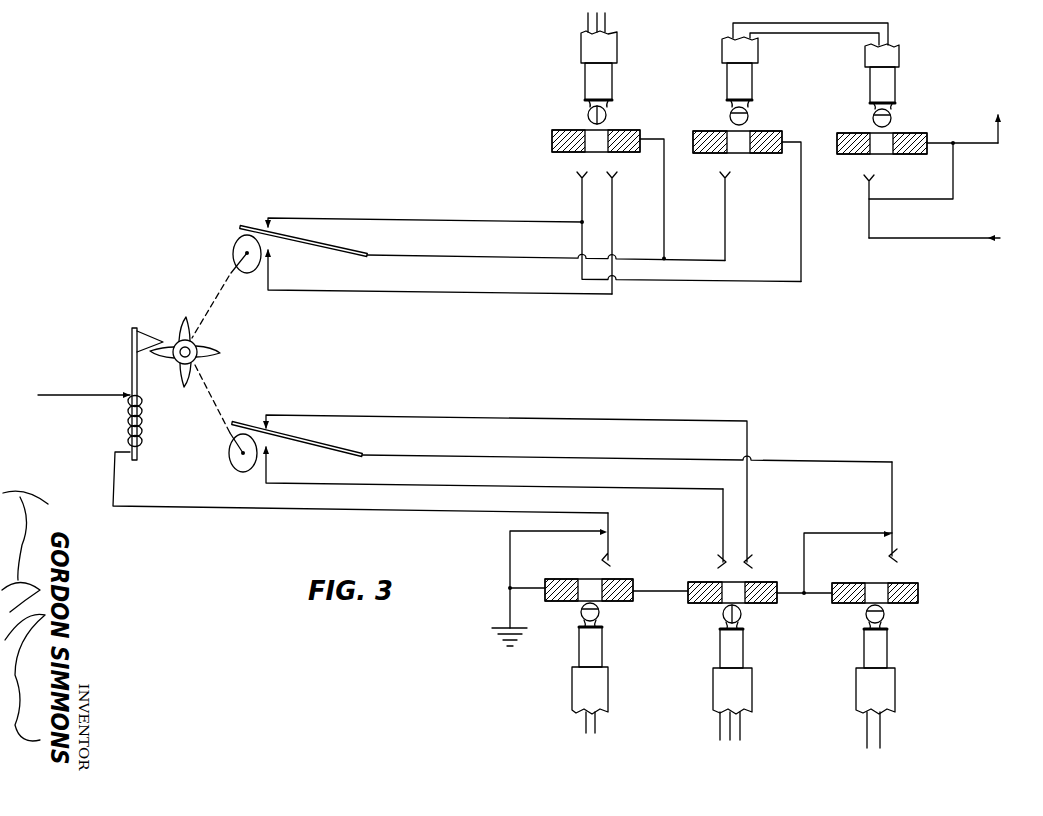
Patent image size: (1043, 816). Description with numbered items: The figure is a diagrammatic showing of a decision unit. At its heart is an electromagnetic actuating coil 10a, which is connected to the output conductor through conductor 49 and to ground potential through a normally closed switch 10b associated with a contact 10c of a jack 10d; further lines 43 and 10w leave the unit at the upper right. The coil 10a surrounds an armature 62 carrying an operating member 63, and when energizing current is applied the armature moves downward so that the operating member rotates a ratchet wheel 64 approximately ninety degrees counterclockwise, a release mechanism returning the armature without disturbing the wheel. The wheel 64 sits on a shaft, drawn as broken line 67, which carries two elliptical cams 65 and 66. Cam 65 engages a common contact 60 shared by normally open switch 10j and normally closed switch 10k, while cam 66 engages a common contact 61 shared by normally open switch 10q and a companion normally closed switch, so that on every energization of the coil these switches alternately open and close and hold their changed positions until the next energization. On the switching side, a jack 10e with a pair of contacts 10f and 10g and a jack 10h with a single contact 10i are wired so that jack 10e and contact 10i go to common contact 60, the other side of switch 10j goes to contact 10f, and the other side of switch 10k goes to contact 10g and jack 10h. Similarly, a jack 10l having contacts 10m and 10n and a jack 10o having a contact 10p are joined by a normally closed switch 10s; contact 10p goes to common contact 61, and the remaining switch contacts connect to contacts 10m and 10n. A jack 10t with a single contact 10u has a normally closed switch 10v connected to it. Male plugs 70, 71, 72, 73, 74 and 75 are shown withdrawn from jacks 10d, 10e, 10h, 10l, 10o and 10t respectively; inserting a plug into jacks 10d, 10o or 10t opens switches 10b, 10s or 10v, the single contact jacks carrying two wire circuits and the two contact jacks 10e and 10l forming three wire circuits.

The electromagnetic actuating coil 10a is at (127, 425).
The normally closed switch 10b is at (548, 533).
The contact 10c is at (610, 560).
The jack 10d is at (618, 603).
The jack 10e is at (553, 139).
The contact 10f is at (617, 172).
The contact 10g is at (572, 172).
The jack 10h is at (695, 134).
The contact 10i is at (730, 173).
The normally open switch 10j is at (311, 282).
The normally closed switch 10k is at (343, 243).
The jack 10l is at (688, 592).
The contact 10m is at (718, 562).
The contact 10n is at (323, 436).
The jack 10o is at (847, 603).
The contact 10p is at (894, 556).
The normally open switch 10q is at (307, 477).
The normally closed switch 10s is at (848, 533).
The jack 10t is at (839, 135).
The contact 10u is at (869, 173).
The normally closed switch 10v is at (904, 200).
The conductor 10w is at (900, 238).
The output line 43 is at (1001, 136).
The conductor 49 is at (57, 393).
The common contact 60 is at (348, 255).
The common contact 61 is at (333, 451).
The armature 62 is at (132, 367).
The operating member 63 is at (158, 325).
The ratchet wheel 64 is at (221, 350).
The cam 65 is at (234, 249).
The cam 66 is at (229, 455).
The shaft 67 is at (194, 418).
The male plug 70 is at (572, 686).
The male plug 71 is at (581, 46).
The male plug 72 is at (722, 52).
The male plug 73 is at (713, 688).
The male plug 74 is at (856, 688).
The male plug 75 is at (865, 55).